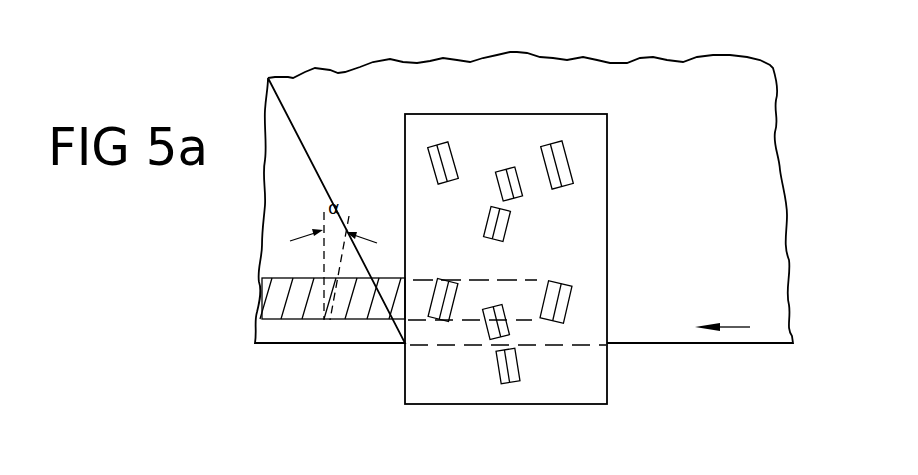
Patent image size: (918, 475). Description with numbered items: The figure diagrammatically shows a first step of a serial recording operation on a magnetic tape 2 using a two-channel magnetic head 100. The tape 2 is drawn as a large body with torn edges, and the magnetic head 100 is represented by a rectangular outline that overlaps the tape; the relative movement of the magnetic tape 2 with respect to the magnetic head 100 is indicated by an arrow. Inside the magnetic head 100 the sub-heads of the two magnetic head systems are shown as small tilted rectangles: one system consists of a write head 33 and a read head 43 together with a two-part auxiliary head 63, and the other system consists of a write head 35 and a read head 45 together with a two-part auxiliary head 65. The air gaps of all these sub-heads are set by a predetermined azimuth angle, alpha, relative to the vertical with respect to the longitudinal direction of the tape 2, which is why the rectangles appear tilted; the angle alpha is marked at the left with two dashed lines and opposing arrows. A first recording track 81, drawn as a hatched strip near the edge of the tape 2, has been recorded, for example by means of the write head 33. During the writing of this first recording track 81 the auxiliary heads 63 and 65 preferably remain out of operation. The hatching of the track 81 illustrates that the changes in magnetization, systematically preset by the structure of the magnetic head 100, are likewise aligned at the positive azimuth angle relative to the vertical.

The magnetic tape 2 is at (590, 62).
The two-channel magnetic head 100 is at (608, 137).
The first recording track 81 is at (272, 295).
The write head 35 is at (431, 157).
The read head 45 is at (542, 155).
The two-part auxiliary head 65 is at (510, 221).
The read head 43 is at (442, 279).
The write head 33 is at (563, 284).
The two-part auxiliary head 63 is at (486, 326).